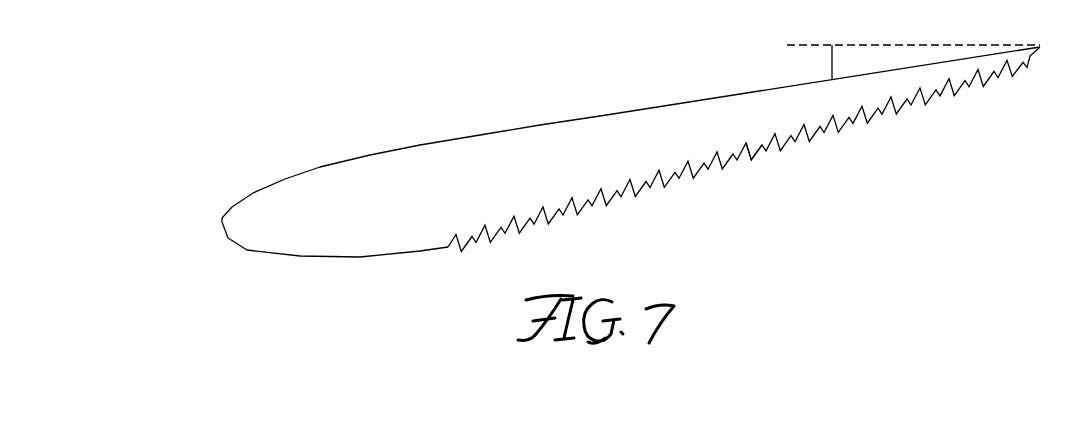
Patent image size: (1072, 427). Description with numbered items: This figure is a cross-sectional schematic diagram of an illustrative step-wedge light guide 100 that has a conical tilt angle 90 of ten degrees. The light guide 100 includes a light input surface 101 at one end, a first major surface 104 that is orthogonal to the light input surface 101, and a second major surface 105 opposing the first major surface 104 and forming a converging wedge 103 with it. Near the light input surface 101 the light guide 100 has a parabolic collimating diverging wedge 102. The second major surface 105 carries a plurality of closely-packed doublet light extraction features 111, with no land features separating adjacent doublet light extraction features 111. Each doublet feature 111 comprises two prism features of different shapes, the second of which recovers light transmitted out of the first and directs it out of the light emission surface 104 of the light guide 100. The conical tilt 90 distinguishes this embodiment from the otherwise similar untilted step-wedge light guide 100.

The step-wedge light guide 100 is at (590, 152).
The light input surface 101 is at (222, 224).
The parabolic collimating diverging wedge 102 is at (368, 226).
The converging wedge 103 is at (707, 146).
The first major surface 104 is at (573, 121).
The second major surface 105 is at (896, 107).
The doublet light extraction feature 111 is at (748, 150).
The conical tilt angle 90 is at (830, 62).